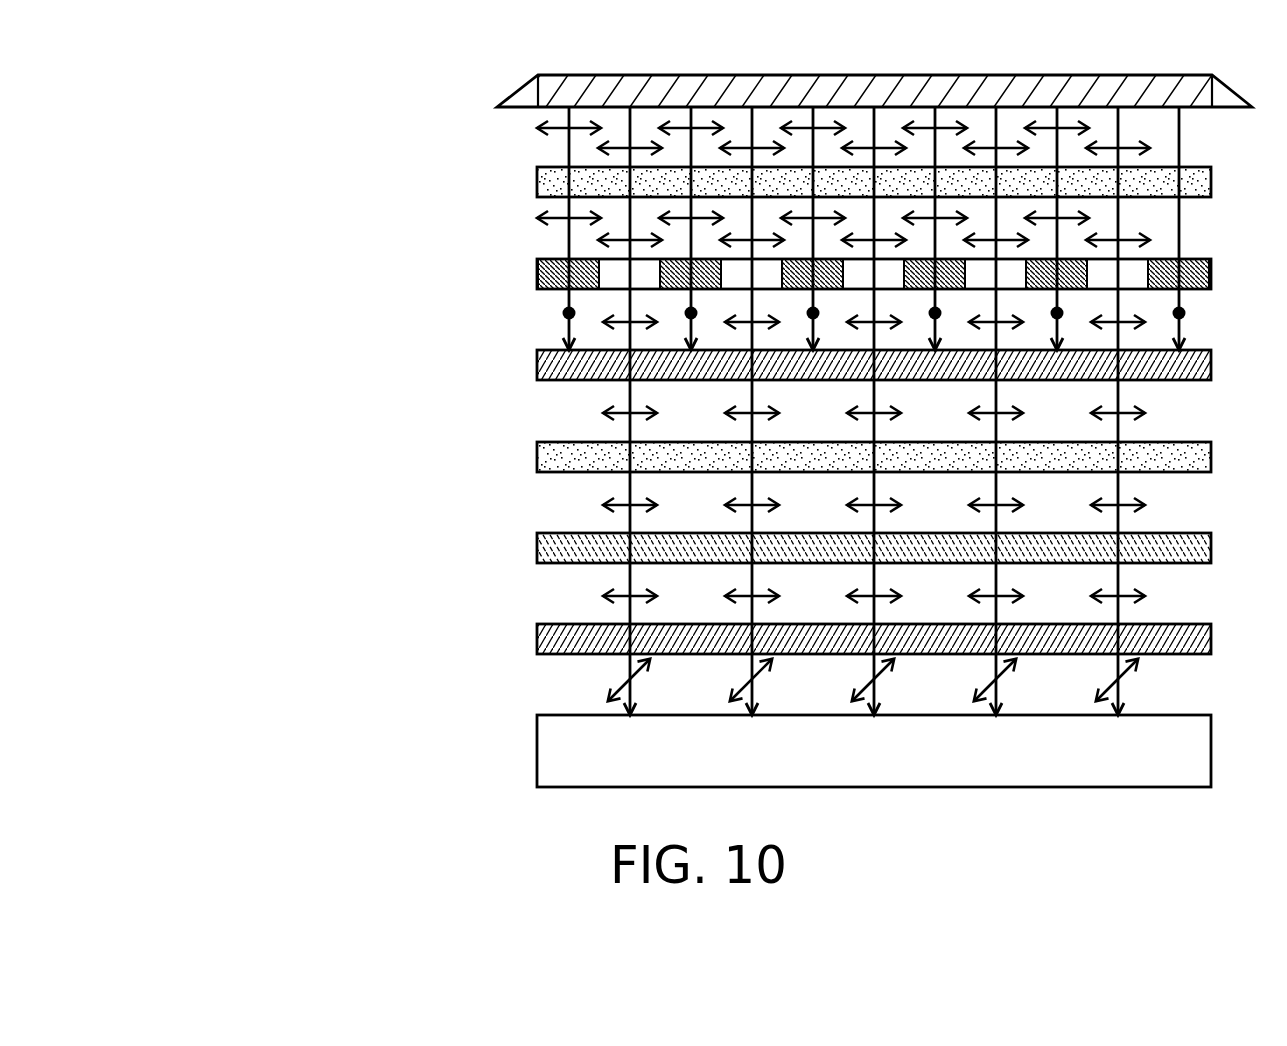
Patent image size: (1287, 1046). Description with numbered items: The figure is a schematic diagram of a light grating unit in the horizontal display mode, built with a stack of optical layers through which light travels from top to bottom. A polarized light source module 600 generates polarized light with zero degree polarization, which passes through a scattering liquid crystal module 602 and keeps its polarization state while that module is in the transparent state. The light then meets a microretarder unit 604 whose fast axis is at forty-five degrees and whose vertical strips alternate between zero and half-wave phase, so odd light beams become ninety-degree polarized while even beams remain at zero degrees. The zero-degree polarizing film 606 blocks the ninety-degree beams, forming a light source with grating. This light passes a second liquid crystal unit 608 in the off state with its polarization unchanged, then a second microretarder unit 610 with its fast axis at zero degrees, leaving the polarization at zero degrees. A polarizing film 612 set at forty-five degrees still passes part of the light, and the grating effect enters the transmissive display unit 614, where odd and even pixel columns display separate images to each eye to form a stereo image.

The polarized light source module 600 is at (497, 90).
The scattering liquid crystal module 602 is at (666, 181).
The microretarder unit 604 is at (730, 271).
The polarizing film 606 is at (748, 362).
The second liquid crystal unit 608 is at (720, 438).
The second microretarder unit 610 is at (729, 547).
The polarizing film 612 is at (745, 639).
The transmissive display unit 614 is at (698, 742).